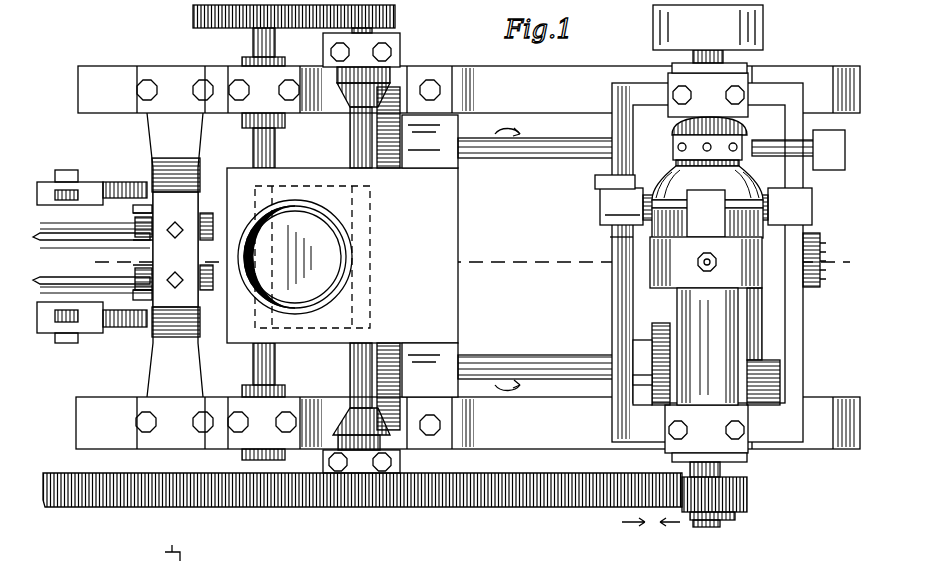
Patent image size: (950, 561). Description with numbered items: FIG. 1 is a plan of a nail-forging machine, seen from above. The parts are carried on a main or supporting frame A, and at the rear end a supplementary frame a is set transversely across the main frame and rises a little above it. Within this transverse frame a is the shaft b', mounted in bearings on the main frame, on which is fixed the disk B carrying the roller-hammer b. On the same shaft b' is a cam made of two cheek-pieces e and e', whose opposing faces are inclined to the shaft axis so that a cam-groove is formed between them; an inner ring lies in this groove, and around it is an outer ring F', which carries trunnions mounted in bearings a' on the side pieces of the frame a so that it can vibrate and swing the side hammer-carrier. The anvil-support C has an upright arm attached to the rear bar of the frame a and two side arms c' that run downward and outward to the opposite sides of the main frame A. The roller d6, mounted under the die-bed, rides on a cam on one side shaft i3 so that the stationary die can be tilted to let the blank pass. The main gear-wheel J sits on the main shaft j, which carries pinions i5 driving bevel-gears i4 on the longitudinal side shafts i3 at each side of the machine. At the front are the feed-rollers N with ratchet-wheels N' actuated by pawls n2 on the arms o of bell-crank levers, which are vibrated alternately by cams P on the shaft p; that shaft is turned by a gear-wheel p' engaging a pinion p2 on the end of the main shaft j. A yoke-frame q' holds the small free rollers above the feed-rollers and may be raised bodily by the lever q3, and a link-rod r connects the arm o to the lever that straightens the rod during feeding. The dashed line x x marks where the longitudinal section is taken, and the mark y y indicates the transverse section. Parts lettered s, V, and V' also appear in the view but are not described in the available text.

The main frame A is at (472, 112).
The supplementary frame a is at (721, 262).
The bearings a' is at (706, 233).
The disk B is at (706, 202).
The roller-hammer b is at (655, 338).
The shaft b' is at (684, 504).
The anvil-support C is at (818, 278).
The side arms c' is at (716, 282).
The roller d6 is at (635, 378).
The cheek-piece e is at (606, 180).
The cheek-piece e' is at (600, 237).
The outer ring F' is at (603, 214).
The shafts i3 is at (535, 160).
The bevel-gears i4 is at (398, 170).
The pinions i5 is at (347, 108).
The main shaft j is at (350, 155).
The main gear-wheel J is at (320, 508).
The feed-rollers N is at (160, 255).
The ratchet-wheels N' is at (178, 253).
The pawls n2 is at (124, 182).
The arm o is at (70, 370).
The cams P is at (228, 180).
The shaft p is at (260, 244).
The gear-wheel p' is at (277, 16).
The pinion p2 is at (395, 14).
The yoke-frame q' is at (140, 297).
The lever q3 is at (91, 258).
The link-rod r is at (62, 182).
The rod s is at (45, 270).
The slide V is at (775, 385).
The slide plate V' is at (620, 358).
The section line x x is at (470, 259).
The section line y y is at (704, 550).